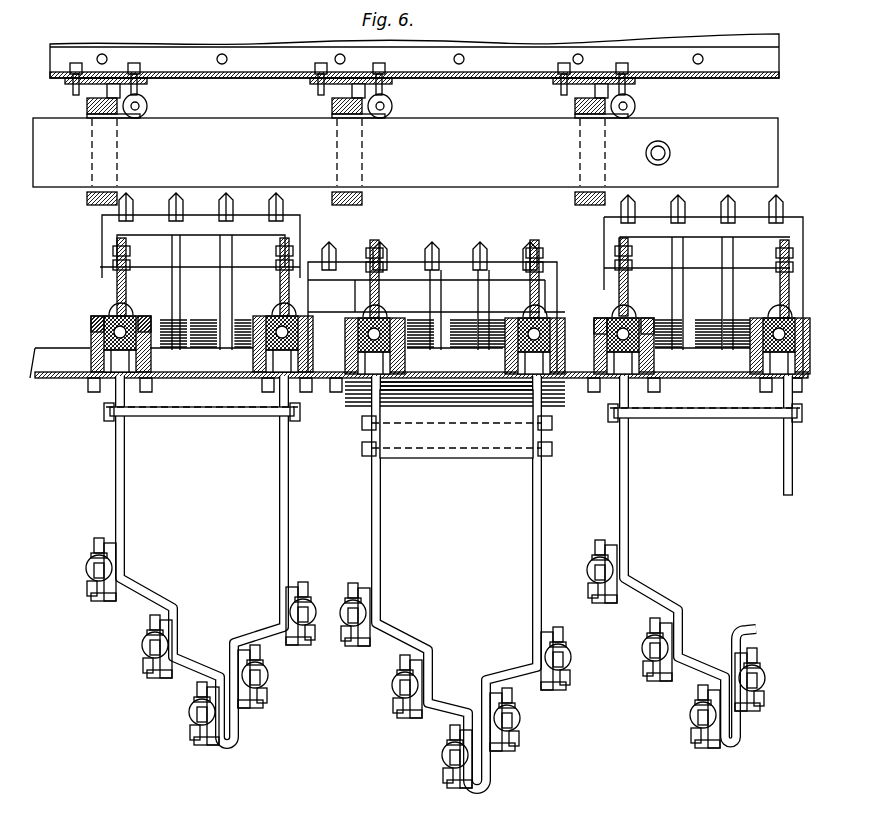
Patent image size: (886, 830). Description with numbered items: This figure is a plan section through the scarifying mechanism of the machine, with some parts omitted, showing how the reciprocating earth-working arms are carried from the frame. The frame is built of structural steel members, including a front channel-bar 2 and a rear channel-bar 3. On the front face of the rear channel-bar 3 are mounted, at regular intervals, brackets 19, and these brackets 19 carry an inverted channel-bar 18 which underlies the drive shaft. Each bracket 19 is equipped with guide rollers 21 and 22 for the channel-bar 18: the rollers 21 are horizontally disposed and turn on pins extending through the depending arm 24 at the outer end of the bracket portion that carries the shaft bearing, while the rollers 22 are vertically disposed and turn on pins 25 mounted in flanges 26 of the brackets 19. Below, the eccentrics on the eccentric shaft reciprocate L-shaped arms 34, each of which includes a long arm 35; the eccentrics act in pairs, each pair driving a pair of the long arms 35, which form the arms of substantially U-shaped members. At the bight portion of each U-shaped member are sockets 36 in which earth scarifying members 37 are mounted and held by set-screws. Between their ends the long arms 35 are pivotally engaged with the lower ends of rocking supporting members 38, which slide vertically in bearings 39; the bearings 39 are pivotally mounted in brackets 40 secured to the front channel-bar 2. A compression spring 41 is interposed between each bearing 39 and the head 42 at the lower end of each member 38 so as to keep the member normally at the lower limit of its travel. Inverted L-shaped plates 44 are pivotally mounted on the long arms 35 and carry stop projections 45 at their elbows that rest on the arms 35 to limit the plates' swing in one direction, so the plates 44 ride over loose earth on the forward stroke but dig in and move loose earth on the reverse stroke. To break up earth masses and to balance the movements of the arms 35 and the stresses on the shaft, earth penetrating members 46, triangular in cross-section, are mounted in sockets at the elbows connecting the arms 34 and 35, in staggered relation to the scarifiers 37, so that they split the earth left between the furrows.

The front channel-bar 2 is at (418, 375).
The rear channel-bar 3 is at (50, 76).
The inverted channel-bar 18 is at (405, 142).
The bracket 19 is at (87, 108).
The guide roller 21 is at (92, 165).
The guide roller 22 is at (148, 108).
The depending arm 24 is at (87, 200).
The pin 25 is at (135, 111).
The flange 26 is at (140, 92).
The arm 34 is at (117, 296).
The long arm 35 is at (126, 522).
The socket 36 is at (148, 632).
The earth scarifying member 37 is at (96, 578).
The rocking supporting member 38 is at (91, 340).
The bearing 39 is at (98, 320).
The bracket 40 is at (128, 322).
The compression spring 41 is at (125, 310).
The head 42 is at (117, 280).
The inverted L-shaped plate 44 is at (164, 408).
The stop projection 45 is at (364, 428).
The earth penetrating member 46 is at (226, 222).